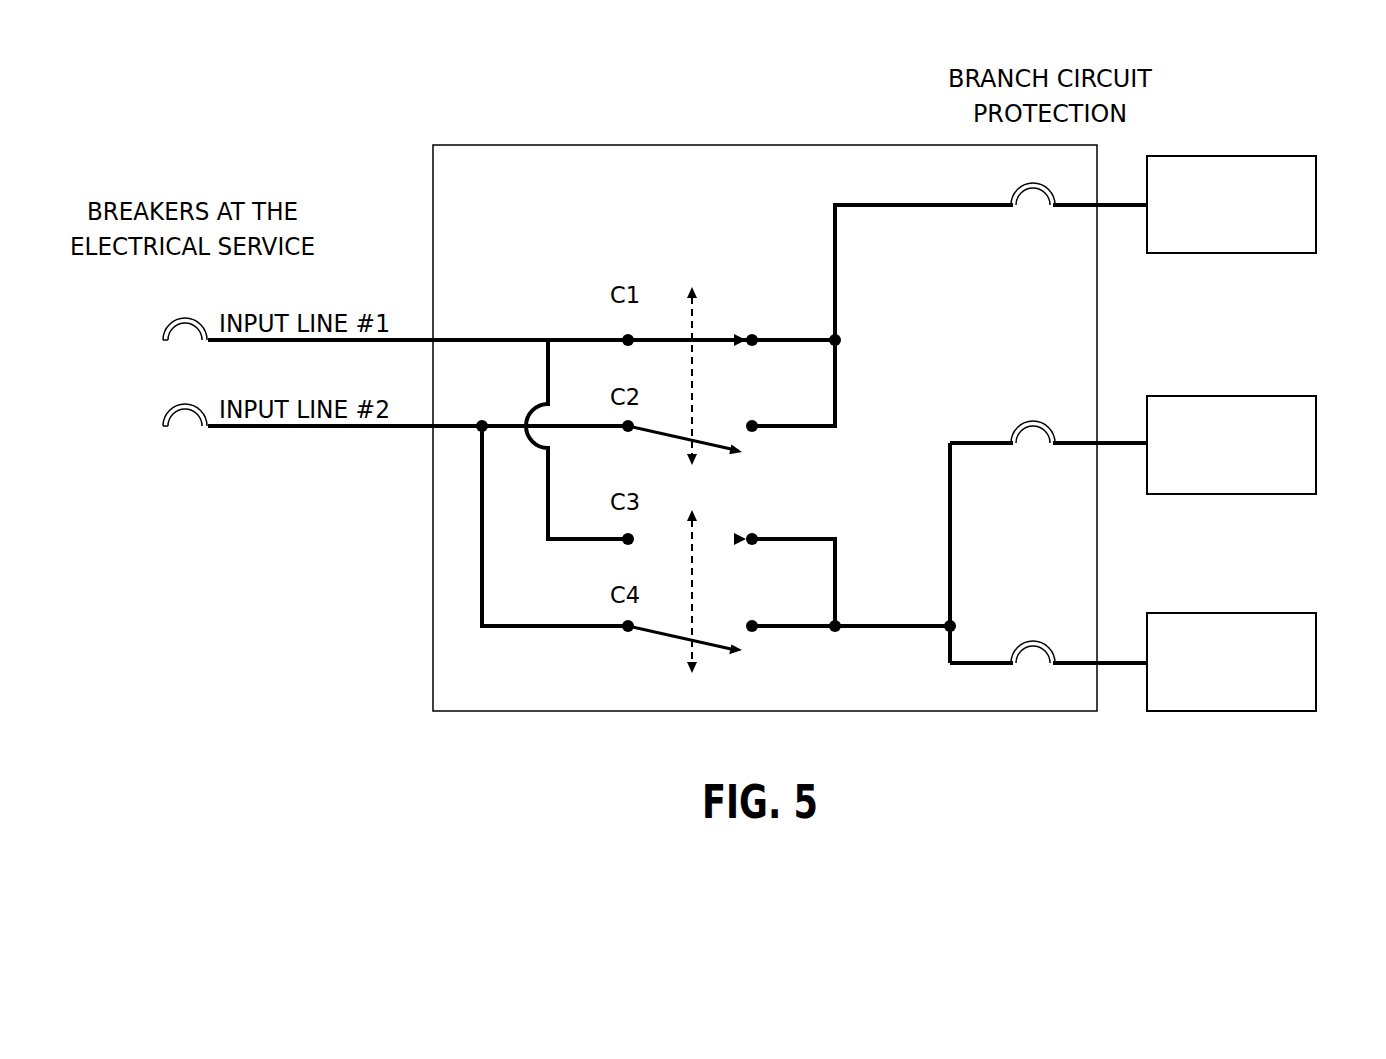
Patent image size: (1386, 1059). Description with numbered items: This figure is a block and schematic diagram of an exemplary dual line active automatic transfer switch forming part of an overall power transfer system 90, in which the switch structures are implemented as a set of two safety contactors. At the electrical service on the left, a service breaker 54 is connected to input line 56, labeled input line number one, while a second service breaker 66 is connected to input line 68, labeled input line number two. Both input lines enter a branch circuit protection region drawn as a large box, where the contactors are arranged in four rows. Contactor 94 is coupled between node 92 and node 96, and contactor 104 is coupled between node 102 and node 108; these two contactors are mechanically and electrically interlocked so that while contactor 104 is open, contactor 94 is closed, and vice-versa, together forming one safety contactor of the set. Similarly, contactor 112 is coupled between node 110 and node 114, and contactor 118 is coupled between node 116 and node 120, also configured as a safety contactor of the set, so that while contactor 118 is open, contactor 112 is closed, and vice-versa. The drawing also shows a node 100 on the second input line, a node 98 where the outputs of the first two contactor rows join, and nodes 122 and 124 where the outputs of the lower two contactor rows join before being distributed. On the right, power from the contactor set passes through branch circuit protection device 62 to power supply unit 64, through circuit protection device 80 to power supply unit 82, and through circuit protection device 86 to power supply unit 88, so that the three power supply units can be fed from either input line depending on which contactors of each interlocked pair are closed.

The service breaker 54 is at (192, 317).
The input line 56 is at (290, 342).
The second service breaker 66 is at (192, 403).
The input line 68 is at (290, 428).
The power transfer system 90 is at (1313, 81).
The node 92 is at (625, 348).
The contactor 94 is at (708, 335).
The node 96 is at (756, 330).
The junction node 98 is at (842, 339).
The junction node on input line 2 100 is at (483, 418).
The node 102 is at (625, 432).
The contactor 104 is at (676, 442).
The node 108 is at (755, 418).
The node 110 is at (622, 548).
The contactor 112 is at (700, 543).
The node 114 is at (755, 530).
The node 116 is at (622, 635).
The contactor 118 is at (710, 651).
The node 120 is at (755, 618).
The junction node 122 is at (840, 633).
The junction node 124 is at (947, 620).
The branch circuit protection 62 is at (1042, 192).
The power supply unit 64 is at (1318, 205).
The circuit protection device 80 is at (1033, 421).
The power supply unit 82 is at (1318, 447).
The circuit protection device 86 is at (1033, 641).
The power supply unit 88 is at (1318, 663).